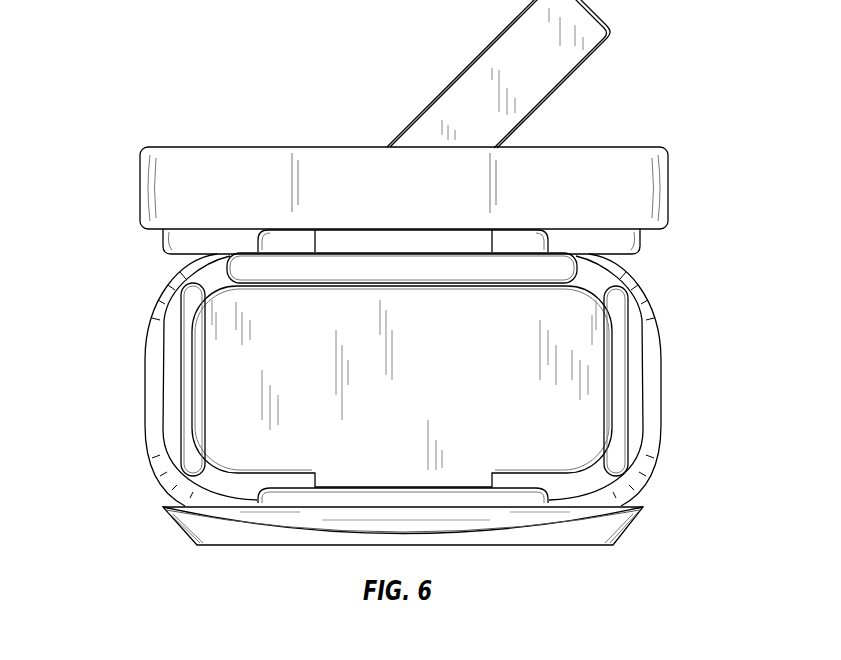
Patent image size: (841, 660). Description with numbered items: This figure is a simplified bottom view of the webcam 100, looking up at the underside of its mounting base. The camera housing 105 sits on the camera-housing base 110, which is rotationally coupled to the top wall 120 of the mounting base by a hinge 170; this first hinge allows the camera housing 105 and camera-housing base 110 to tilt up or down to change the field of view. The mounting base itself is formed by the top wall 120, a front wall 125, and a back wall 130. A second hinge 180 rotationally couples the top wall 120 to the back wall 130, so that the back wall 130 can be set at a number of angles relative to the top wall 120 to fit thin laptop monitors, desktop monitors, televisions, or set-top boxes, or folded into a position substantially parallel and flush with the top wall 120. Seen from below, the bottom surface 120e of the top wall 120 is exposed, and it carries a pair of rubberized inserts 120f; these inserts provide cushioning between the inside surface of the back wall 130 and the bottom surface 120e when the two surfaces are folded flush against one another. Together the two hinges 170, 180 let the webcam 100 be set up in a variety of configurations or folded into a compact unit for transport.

The webcam 100 is at (100, 522).
The camera housing 105 is at (567, 80).
The camera-housing base 110 is at (668, 192).
The top wall 120 is at (662, 390).
The bottom surface 120e is at (464, 391).
The rubberized inserts 120f is at (167, 385).
The front wall 125 is at (419, 279).
The back wall 130 is at (637, 522).
The hinge 170 is at (385, 496).
The hinge 180 is at (425, 240).